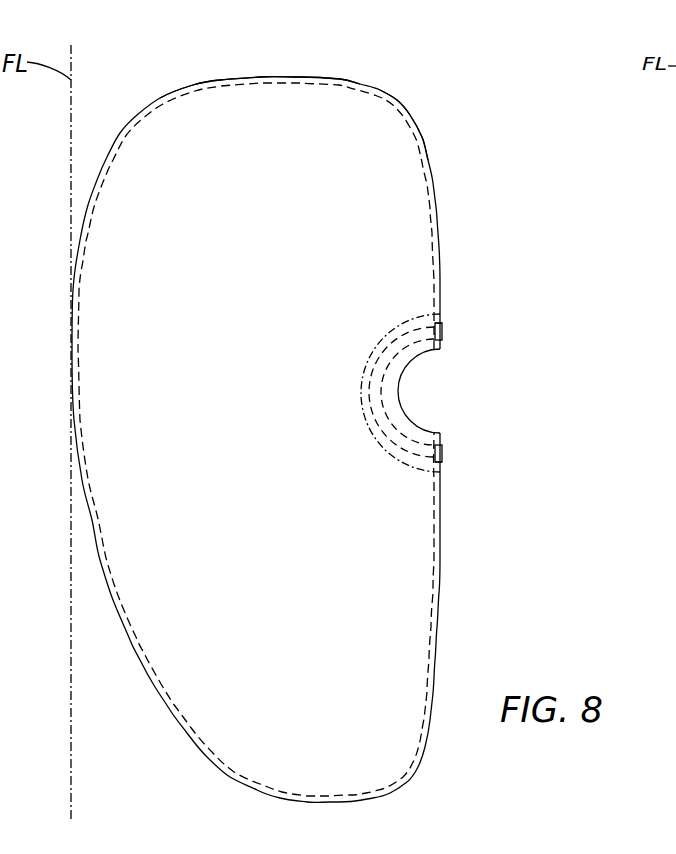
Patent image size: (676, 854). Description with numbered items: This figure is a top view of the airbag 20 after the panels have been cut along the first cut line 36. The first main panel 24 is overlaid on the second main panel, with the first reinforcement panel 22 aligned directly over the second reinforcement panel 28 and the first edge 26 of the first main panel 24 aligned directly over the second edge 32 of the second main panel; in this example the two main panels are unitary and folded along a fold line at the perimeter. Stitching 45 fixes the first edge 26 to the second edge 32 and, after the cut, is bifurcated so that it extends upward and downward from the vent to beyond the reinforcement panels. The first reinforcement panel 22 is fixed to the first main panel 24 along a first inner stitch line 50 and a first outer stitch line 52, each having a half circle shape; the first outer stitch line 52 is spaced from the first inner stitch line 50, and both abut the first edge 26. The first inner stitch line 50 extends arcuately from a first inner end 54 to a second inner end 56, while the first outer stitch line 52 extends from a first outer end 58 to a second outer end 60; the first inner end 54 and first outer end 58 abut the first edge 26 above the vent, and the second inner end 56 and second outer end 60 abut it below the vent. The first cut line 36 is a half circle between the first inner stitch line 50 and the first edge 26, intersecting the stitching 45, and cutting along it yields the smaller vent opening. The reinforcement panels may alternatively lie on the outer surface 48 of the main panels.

The airbag 20 is at (580, 129).
The first reinforcement panel 22 is at (355, 378).
The first main panel 24 is at (213, 120).
The first edge 26 is at (309, 439).
The second reinforcement panel 28 is at (382, 340).
The second edge 32 is at (438, 231).
The first cut line 36 is at (400, 382).
The stitching 45 is at (428, 163).
The outer surface 48 is at (335, 120).
The first inner stitch line 50 is at (401, 428).
The first outer stitch line 52 is at (400, 443).
The first inner end 54 is at (442, 334).
The second inner end 56 is at (442, 448).
The first outer end 58 is at (441, 324).
The second outer end 60 is at (441, 460).